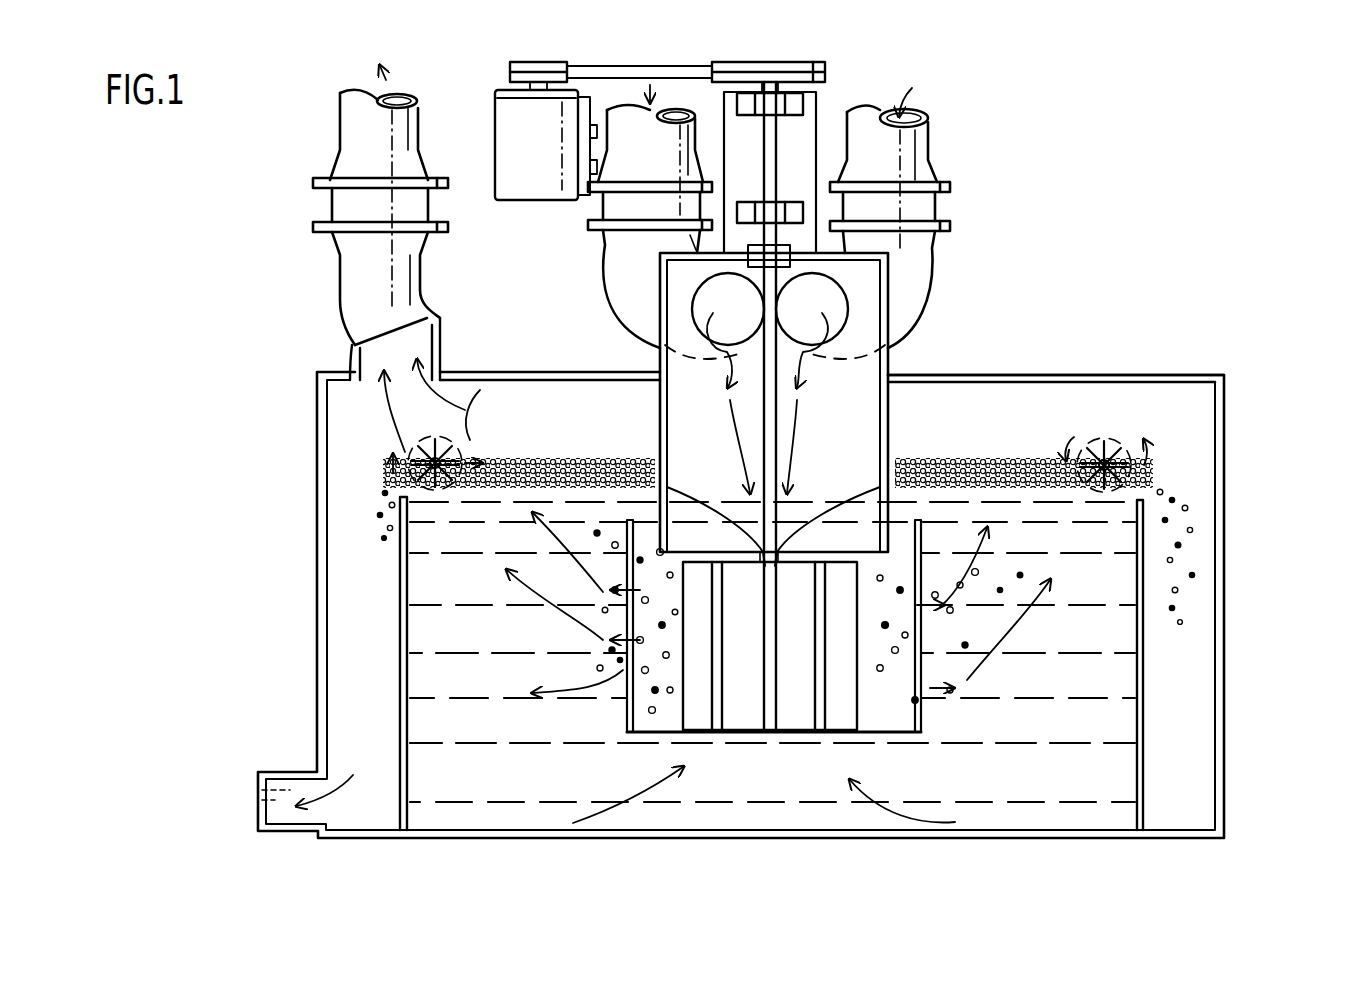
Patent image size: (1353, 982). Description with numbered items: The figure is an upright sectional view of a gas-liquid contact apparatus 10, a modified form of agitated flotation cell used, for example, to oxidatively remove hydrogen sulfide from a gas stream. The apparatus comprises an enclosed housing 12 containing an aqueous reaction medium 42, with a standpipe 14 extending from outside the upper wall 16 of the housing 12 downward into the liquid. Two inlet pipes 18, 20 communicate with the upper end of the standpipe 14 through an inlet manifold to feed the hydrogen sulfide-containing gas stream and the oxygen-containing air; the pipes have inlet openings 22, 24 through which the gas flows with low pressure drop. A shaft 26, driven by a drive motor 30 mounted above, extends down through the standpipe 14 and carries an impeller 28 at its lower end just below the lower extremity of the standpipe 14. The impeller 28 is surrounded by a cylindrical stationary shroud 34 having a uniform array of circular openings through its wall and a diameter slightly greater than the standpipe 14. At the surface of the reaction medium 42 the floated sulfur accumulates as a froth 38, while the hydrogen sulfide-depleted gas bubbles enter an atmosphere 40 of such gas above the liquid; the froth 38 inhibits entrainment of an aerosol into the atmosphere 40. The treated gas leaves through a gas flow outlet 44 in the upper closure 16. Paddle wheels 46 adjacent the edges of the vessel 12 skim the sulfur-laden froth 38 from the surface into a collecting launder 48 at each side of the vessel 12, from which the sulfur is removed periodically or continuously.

The gas-liquid contact apparatus 10 is at (1298, 396).
The enclosed housing 12 is at (1222, 676).
The standpipe 14 is at (888, 428).
The upper wall 16 is at (1068, 375).
The inlet pipe 18 is at (932, 265).
The inlet pipe 20 is at (622, 298).
The inlet opening 22 is at (850, 313).
The inlet opening 24 is at (708, 335).
The shaft 26 is at (768, 422).
The impeller 28 is at (767, 697).
The drive motor 30 is at (522, 180).
The cylindrical stationary shroud 34 is at (921, 567).
The froth 38 is at (557, 467).
The atmosphere 40 is at (523, 417).
The reaction medium 42 is at (492, 820).
The gas flow outlet 44 is at (343, 285).
The paddle wheel 46 is at (413, 432).
The collecting launder 48 is at (343, 670).